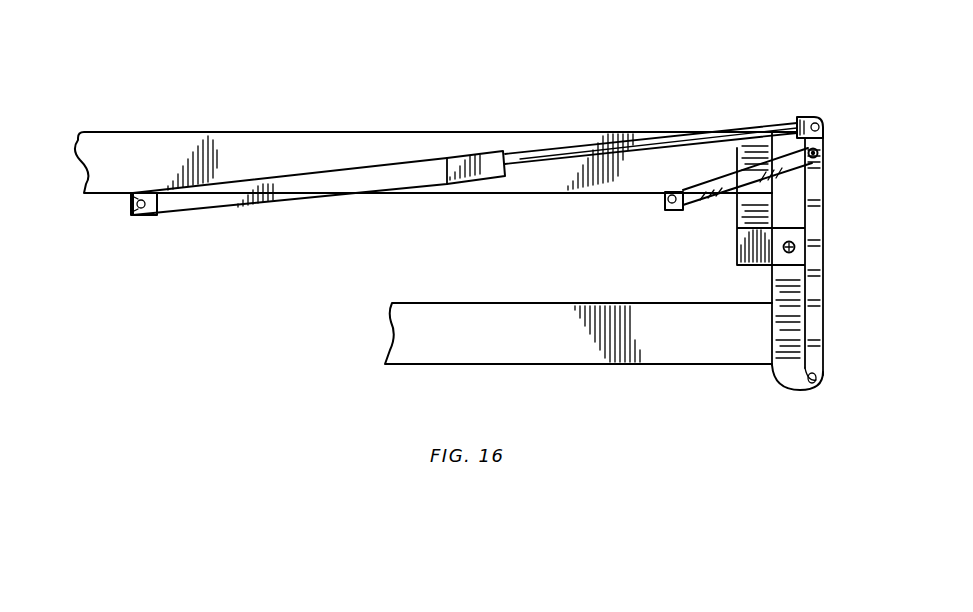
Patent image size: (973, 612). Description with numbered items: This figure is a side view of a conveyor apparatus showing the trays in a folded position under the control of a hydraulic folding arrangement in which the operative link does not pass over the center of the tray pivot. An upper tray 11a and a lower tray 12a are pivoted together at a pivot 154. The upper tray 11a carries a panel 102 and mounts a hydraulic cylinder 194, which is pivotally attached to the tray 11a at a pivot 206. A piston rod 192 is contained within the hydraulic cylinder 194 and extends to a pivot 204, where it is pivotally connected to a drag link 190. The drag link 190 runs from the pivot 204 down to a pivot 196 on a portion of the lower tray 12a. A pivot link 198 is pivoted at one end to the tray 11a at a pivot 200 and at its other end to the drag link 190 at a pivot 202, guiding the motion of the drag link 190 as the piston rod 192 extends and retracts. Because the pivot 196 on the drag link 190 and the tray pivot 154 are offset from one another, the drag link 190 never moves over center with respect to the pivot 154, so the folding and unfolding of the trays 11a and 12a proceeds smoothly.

The tray 11a is at (435, 126).
The upper panel 102 is at (122, 132).
The tray 12a is at (495, 367).
The piston rod 192 is at (547, 160).
The hydraulic cylinder 194 is at (218, 203).
The pivot 206 is at (133, 217).
The pivot 200 is at (666, 207).
The pivot link 198 is at (728, 190).
The pivot 202 is at (822, 152).
The pivot 204 is at (822, 117).
The pivot 154 is at (794, 245).
The drag link 190 is at (820, 285).
The pivot 196 is at (823, 372).